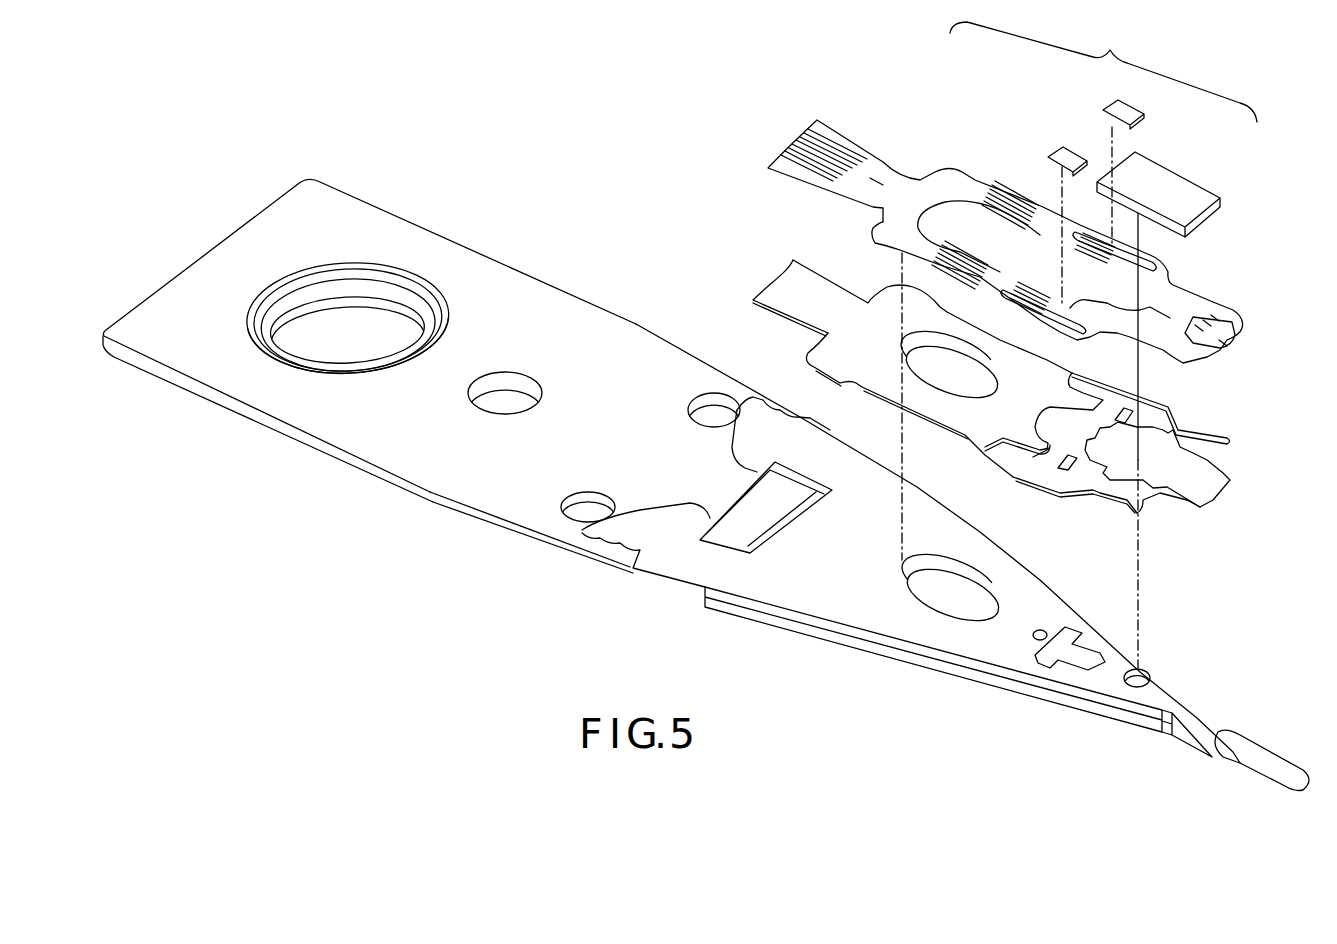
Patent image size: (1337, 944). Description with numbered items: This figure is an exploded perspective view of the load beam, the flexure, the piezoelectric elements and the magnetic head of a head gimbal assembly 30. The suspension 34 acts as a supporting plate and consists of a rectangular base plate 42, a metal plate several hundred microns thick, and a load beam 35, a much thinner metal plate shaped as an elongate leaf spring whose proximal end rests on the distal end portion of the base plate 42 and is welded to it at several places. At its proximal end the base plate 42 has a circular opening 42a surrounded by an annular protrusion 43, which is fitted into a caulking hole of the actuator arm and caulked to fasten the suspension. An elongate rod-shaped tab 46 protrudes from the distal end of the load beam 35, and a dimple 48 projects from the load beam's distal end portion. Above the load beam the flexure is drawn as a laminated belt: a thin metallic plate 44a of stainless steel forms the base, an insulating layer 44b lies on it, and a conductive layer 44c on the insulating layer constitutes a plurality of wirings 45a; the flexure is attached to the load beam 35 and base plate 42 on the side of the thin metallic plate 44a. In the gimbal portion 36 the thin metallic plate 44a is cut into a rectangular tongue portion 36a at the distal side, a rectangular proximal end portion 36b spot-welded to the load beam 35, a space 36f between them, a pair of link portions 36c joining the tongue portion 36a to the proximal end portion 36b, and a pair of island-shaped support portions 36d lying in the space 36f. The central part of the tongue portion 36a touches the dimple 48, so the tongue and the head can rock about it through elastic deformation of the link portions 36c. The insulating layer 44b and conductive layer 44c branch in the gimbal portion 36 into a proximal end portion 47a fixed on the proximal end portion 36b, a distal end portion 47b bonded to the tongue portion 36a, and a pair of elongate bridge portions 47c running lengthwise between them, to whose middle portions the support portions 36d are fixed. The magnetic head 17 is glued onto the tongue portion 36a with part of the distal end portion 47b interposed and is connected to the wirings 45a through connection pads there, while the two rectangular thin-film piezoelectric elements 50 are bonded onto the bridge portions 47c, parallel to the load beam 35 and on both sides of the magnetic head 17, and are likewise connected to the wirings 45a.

The magnetic head 17 is at (1175, 180).
The head gimbal assembly 30 is at (718, 132).
The suspension 34 is at (505, 566).
The load beam 35 is at (845, 600).
The gimbal portion 36 is at (1005, 289).
The tongue portion 36a is at (1163, 473).
The proximal end portion 36b is at (988, 412).
The link portions 36c is at (1133, 388).
The island-shaped support portions 36d is at (1133, 410).
The space 36f is at (1063, 437).
The base plate 42 is at (404, 447).
The circular opening 42a is at (360, 332).
The annular protrusion 43 is at (308, 300).
The thin metallic plate 44a is at (828, 363).
The insulating layer 44b is at (840, 190).
The conductive layer 44c is at (870, 176).
The wirings 45a is at (837, 153).
The tab 46 is at (1262, 757).
The proximal end portion 47a is at (1043, 220).
The distal end portion 47b is at (1220, 343).
The bridge portions 47c is at (1120, 267).
The dimple 48 is at (1142, 668).
The piezoelectric elements 50 is at (1070, 152).